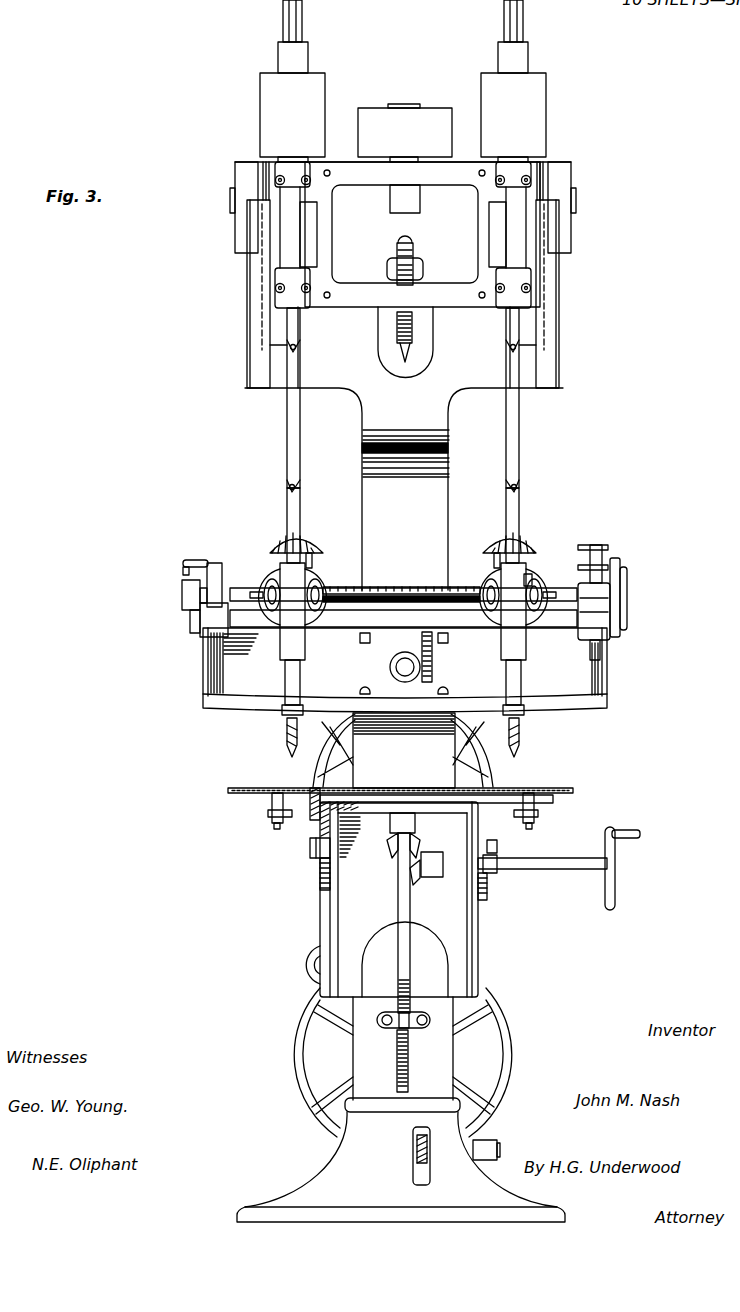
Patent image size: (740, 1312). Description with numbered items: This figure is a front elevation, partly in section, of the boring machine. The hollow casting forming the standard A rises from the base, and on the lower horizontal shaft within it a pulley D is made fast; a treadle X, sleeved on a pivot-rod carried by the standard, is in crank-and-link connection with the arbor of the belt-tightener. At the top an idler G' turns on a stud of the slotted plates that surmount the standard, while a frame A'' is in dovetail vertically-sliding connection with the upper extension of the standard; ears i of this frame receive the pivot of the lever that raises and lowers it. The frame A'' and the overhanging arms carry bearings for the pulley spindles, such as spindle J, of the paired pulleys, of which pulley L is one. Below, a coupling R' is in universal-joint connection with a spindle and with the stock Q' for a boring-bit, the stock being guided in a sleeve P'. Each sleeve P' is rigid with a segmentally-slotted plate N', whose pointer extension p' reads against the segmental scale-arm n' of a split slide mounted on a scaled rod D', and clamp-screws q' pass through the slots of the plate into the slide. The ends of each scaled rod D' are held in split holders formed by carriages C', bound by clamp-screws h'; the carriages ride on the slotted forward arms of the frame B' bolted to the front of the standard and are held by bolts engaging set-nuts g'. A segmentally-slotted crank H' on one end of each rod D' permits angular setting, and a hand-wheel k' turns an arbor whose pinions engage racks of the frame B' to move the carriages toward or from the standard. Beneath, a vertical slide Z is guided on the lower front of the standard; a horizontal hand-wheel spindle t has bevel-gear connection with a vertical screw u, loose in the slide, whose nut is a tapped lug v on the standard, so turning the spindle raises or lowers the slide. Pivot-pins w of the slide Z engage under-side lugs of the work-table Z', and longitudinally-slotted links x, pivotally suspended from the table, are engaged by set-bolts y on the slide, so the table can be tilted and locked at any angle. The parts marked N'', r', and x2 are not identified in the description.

The pulley L is at (260, 105).
The idler G' is at (405, 133).
The spindle J is at (297, 245).
The frame A'' is at (422, 234).
The ears i is at (390, 255).
The segmentally-slotted plate N' is at (430, 337).
The coupling R' is at (400, 399).
The standard A is at (404, 448).
The stock for a boring-bit Q' is at (420, 618).
The segmental scale-arm n' is at (390, 533).
The pointer extension p' is at (403, 568).
The clamp-screws q' is at (406, 603).
The bracket N'' is at (543, 560).
The scaled rod D' is at (403, 589).
The segmentally-slotted crank H' is at (416, 580).
The clamp-screw h' is at (218, 574).
The carriages C' is at (404, 612).
The hand-wheel k' is at (642, 598).
The set-nuts g' is at (596, 545).
The frame B' is at (383, 670).
The disk r' is at (400, 619).
The sleeve P' is at (423, 611).
The work-table Z' is at (400, 780).
The pivot-pins w is at (268, 815).
The set-bolts y is at (312, 850).
The longitudinally-slotted links x is at (320, 879).
The rack x2 is at (487, 889).
The hand-wheel spindle t is at (568, 866).
The vertical slide Z is at (410, 892).
The vertical screw u is at (400, 963).
The pulley D is at (413, 1062).
The tapped lug v is at (392, 1030).
The treadle X is at (414, 1146).